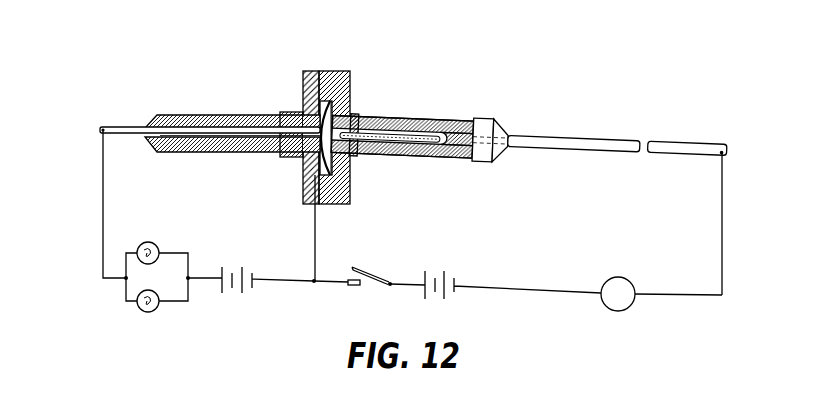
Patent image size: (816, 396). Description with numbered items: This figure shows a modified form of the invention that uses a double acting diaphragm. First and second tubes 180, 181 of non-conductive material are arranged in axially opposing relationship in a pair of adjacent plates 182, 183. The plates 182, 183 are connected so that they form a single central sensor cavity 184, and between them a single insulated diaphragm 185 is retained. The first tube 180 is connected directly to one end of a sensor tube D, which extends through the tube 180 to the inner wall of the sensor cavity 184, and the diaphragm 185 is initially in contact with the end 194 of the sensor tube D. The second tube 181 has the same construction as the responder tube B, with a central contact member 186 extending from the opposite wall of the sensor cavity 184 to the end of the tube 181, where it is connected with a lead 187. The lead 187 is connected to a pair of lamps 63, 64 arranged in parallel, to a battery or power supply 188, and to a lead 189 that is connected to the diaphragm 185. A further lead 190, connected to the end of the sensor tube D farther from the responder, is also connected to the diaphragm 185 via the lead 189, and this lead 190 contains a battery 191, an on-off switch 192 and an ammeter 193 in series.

The first tube 180 is at (397, 115).
The second tube 181 is at (215, 115).
The plate 182 is at (348, 198).
The plate 183 is at (303, 195).
The sensor cavity 184 is at (328, 100).
The insulated diaphragm 185 is at (322, 166).
The central contact member 186 is at (128, 127).
The lead 187 is at (103, 212).
The battery or power supply 188 is at (238, 298).
The lead 189 is at (314, 250).
The lead 190 is at (722, 205).
The battery 191 is at (622, 278).
The on-off switch 192 is at (457, 278).
The ammeter 193 is at (368, 285).
The end of the sensor tube 194 is at (348, 112).
The lamp 63 is at (157, 244).
The lamp 64 is at (158, 311).
The responder tube B is at (238, 156).
The sensor tube D is at (597, 129).